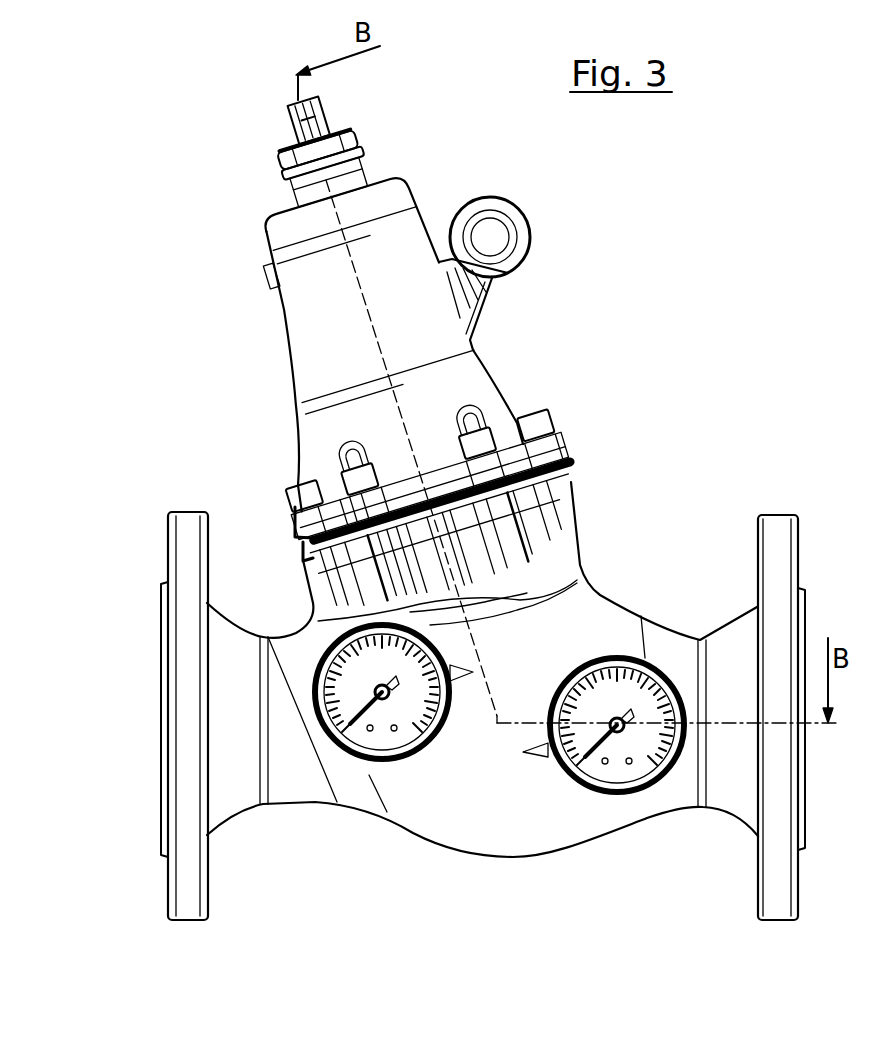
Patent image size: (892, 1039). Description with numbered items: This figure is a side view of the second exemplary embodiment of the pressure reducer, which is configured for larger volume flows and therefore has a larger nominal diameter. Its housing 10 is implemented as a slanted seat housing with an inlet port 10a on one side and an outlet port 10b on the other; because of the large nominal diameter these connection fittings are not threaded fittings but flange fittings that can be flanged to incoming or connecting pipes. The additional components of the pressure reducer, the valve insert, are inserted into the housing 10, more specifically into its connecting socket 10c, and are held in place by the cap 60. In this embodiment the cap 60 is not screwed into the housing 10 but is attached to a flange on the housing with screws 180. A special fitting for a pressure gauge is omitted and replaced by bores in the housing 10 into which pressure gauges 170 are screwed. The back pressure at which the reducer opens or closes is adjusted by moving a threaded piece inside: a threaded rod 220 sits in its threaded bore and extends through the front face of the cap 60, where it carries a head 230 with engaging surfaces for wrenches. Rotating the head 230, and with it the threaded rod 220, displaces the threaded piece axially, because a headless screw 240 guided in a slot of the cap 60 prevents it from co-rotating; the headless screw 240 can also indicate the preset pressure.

The housing 10 is at (568, 632).
The inlet port 10a is at (234, 662).
The outlet port 10b is at (733, 668).
The connecting socket 10c is at (530, 492).
The cap 60 is at (373, 238).
The pressure gauges 170 is at (615, 710).
The screws 180 is at (535, 423).
The threaded rod 220 is at (287, 115).
The head 230 is at (325, 150).
The headless screw 240 is at (292, 172).